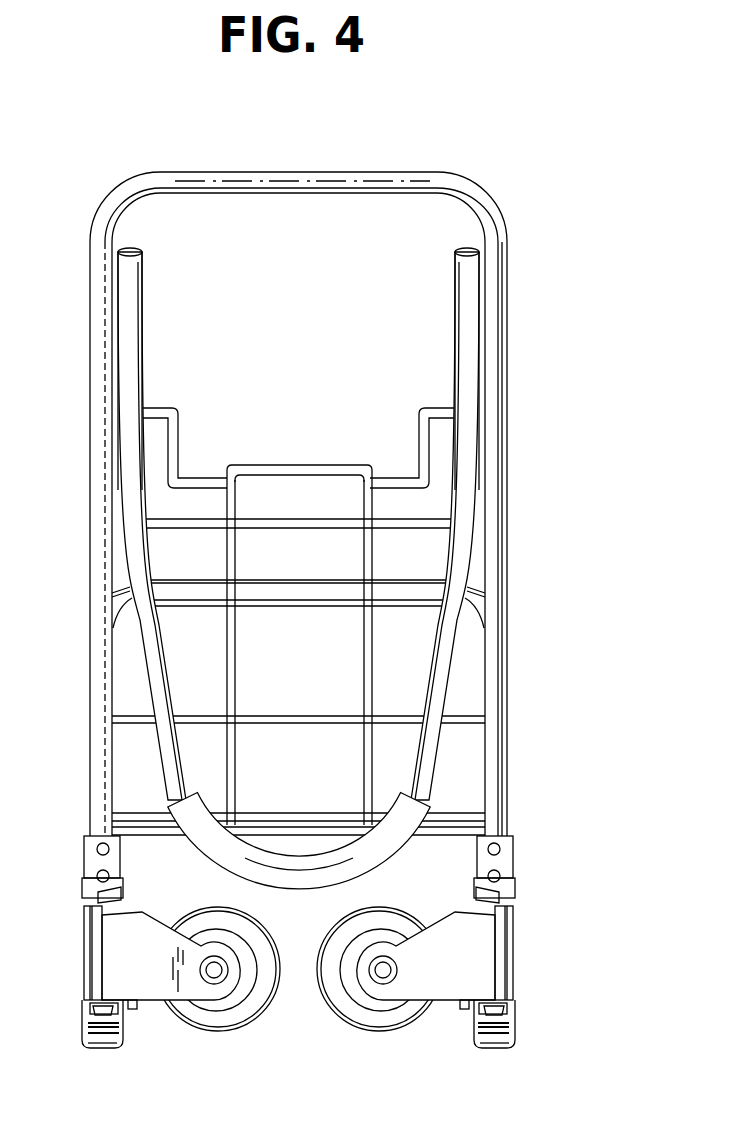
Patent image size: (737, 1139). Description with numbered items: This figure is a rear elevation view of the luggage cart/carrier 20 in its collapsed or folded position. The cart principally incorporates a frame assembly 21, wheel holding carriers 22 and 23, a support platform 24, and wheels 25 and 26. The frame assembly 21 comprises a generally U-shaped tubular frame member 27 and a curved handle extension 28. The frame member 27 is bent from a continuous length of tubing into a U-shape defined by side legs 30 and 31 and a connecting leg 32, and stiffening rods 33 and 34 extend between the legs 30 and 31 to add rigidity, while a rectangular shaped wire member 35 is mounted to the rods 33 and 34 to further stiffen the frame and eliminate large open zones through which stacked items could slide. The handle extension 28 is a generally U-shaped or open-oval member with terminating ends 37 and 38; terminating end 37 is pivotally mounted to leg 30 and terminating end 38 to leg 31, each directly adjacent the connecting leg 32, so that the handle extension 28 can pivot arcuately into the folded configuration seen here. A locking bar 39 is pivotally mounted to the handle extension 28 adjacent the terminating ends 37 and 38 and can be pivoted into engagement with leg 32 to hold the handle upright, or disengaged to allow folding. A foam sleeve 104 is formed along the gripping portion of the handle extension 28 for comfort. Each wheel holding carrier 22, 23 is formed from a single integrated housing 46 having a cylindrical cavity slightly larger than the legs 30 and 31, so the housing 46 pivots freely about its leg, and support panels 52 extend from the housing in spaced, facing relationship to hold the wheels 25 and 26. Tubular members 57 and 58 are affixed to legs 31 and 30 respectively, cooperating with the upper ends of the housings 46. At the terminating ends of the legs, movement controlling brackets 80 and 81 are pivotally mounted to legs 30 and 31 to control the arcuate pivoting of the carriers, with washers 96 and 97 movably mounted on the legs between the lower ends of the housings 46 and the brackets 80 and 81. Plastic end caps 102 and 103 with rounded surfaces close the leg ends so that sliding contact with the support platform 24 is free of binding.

The luggage cart/carrier 20 is at (306, 466).
The frame assembly 21 is at (508, 492).
The wheel holding carrier 22 is at (103, 977).
The wheel holding carrier 23 is at (500, 967).
The support platform 24 is at (349, 595).
The wheel 25 is at (217, 1020).
The wheel 26 is at (390, 1020).
The tubular frame member 27 is at (100, 328).
The handle extension 28 is at (298, 524).
The side leg 30 is at (504, 692).
The side leg 31 is at (92, 671).
The connecting leg 32 is at (261, 176).
The stiffening rod 33 is at (272, 527).
The stiffening rod 34 is at (288, 820).
The rectangular shaped wire member 35 is at (232, 690).
The terminating end 37 is at (457, 263).
The terminating end 38 is at (140, 262).
The locking bar 39 is at (298, 614).
The housing 46 is at (308, 959).
The support panel 52 is at (148, 926).
The tubular member 57 is at (512, 860).
The tubular member 58 is at (88, 860).
The movement controlling bracket 80 is at (537, 1051).
The movement controlling bracket 81 is at (69, 1051).
The washer 96 is at (497, 991).
The washer 97 is at (112, 997).
The end cap 102 is at (500, 1020).
The end cap 103 is at (96, 1027).
The foam sleeve 104 is at (283, 877).